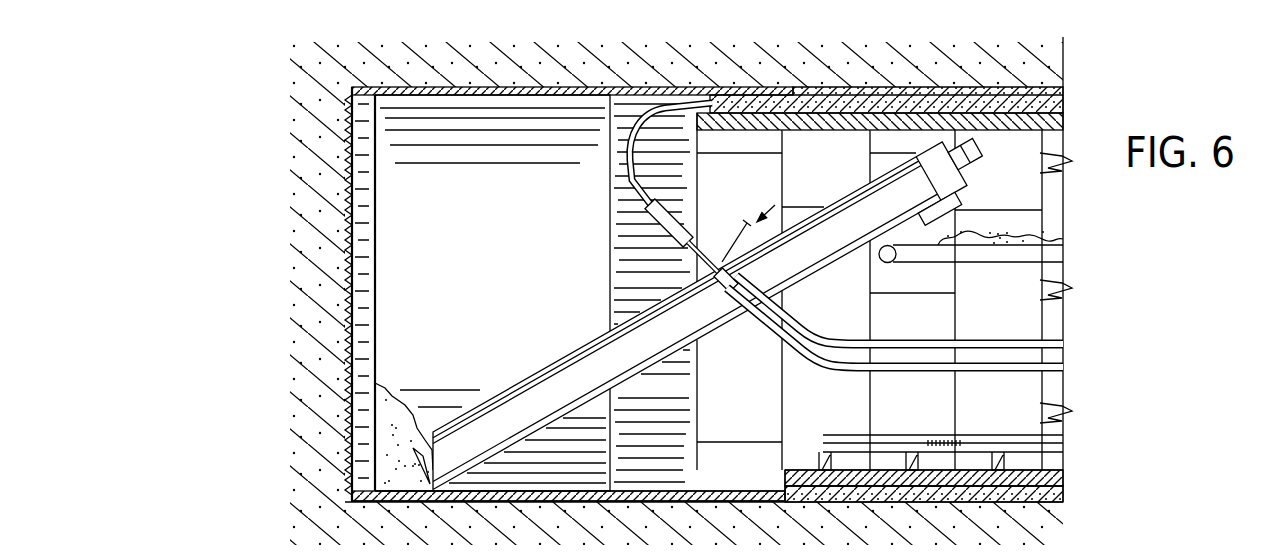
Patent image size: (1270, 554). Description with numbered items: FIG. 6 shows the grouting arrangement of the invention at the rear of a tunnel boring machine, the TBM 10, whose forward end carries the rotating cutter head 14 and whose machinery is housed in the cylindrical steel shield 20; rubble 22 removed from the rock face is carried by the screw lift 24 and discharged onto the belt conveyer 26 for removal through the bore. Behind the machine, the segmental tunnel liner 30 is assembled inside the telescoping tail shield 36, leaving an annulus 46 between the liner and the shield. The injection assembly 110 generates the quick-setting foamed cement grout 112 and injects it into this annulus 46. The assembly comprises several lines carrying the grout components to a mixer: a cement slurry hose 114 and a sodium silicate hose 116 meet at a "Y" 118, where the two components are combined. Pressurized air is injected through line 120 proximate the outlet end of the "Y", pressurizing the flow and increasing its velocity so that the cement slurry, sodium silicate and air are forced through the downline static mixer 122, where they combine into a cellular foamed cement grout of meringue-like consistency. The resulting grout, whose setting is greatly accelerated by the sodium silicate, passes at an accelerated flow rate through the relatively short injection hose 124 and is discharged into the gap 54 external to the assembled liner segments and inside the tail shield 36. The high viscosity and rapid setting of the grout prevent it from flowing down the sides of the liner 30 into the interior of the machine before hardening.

The TBM 10 is at (348, 147).
The rotating cutter head 14 is at (343, 233).
The cylindrical steel shield 20 is at (500, 286).
The rubble 22 is at (408, 408).
The screw lift 24 is at (518, 381).
The belt conveyer 26 is at (1022, 263).
The tunnel liner 30 is at (982, 108).
The telescoping tail shield 36 is at (667, 286).
The annulus 46 is at (1066, 103).
The gap 54 is at (755, 115).
The injection assembly 110 is at (632, 215).
The quick-setting foamed cement grout 112 is at (856, 90).
The cement slurry hose 114 is at (1028, 372).
The sodium silicate hose 116 is at (1032, 339).
The "Y" fitting 118 is at (724, 286).
The air line 120 is at (722, 245).
The static mixer 122 is at (657, 221).
The injection hose 124 is at (627, 158).